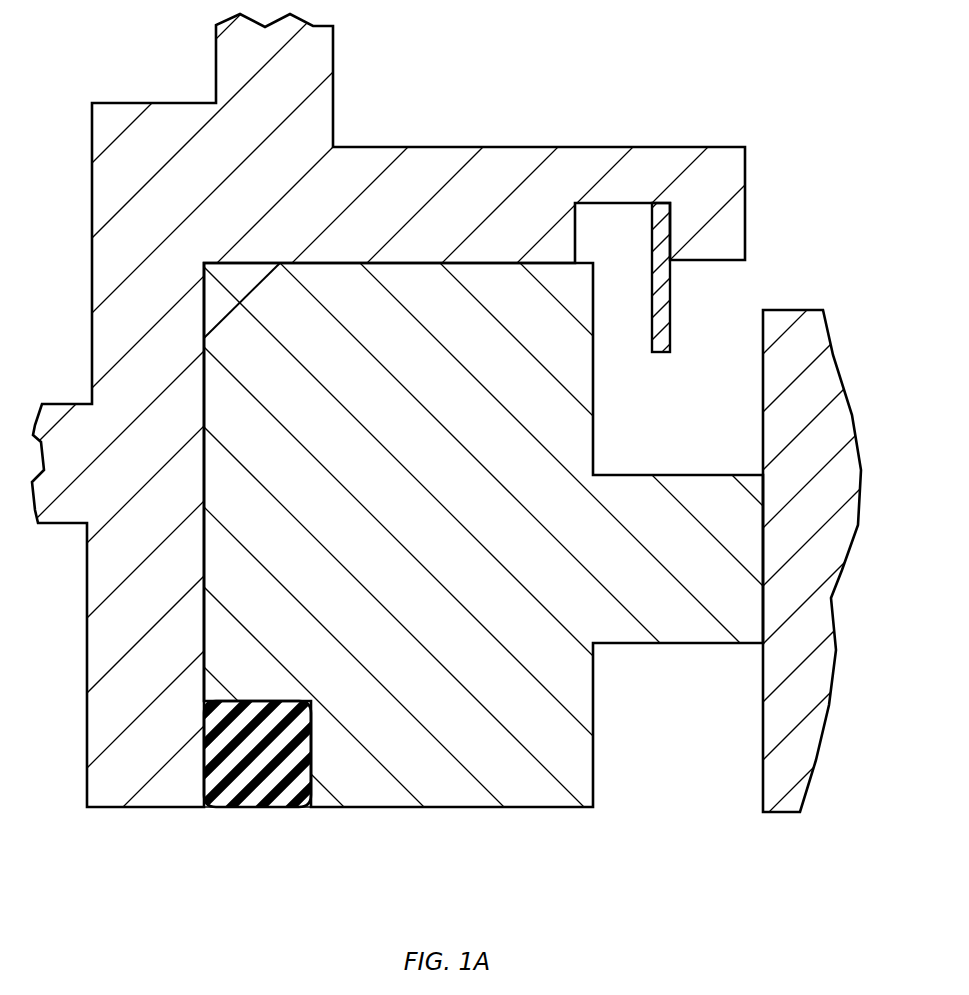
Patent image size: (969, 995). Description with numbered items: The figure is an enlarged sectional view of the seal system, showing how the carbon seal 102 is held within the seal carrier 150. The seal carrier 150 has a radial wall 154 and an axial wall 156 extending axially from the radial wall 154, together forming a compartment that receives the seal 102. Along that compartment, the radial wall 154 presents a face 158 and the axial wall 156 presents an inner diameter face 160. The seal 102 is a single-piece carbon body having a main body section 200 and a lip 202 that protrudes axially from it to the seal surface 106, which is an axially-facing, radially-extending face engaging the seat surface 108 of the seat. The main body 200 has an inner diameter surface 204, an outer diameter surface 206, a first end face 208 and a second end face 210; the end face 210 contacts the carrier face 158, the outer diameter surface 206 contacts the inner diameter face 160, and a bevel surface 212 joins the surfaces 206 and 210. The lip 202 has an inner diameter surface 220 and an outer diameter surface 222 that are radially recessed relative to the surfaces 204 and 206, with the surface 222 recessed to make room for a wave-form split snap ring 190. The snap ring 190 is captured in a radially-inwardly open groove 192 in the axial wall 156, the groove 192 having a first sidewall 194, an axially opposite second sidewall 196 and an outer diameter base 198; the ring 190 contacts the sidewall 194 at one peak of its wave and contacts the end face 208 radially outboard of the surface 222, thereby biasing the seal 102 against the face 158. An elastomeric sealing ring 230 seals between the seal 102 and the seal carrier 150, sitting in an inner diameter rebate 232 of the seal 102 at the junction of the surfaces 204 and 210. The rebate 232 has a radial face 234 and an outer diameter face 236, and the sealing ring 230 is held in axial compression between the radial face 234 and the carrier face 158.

The seal carrier 150 is at (772, 87).
The seal 102 is at (322, 553).
The seal surface 106 is at (763, 543).
The seat surface 108 is at (770, 598).
The radial wall 154 is at (120, 616).
The axial wall 156 is at (463, 173).
The face 158 is at (204, 410).
The face 160 is at (376, 268).
The snap ring 190 is at (677, 312).
The groove 192 is at (605, 233).
The first sidewall 194 is at (657, 215).
The second sidewall 196 is at (573, 207).
The base 198 is at (614, 203).
The main body section 200 is at (415, 820).
The lip 202 is at (670, 598).
The inner diameter surface 204 is at (382, 808).
The outer diameter surface 206 is at (397, 263).
The first end face 208 is at (593, 770).
The second end face 210 is at (200, 620).
The bevel surface 212 is at (255, 288).
The inner diameter surface 220 is at (693, 643).
The outer diameter surface 222 is at (687, 473).
The sealing ring 230 is at (268, 747).
The rebate 232 is at (267, 780).
The radial face 234 is at (290, 812).
The outer diameter face 236 is at (217, 738).